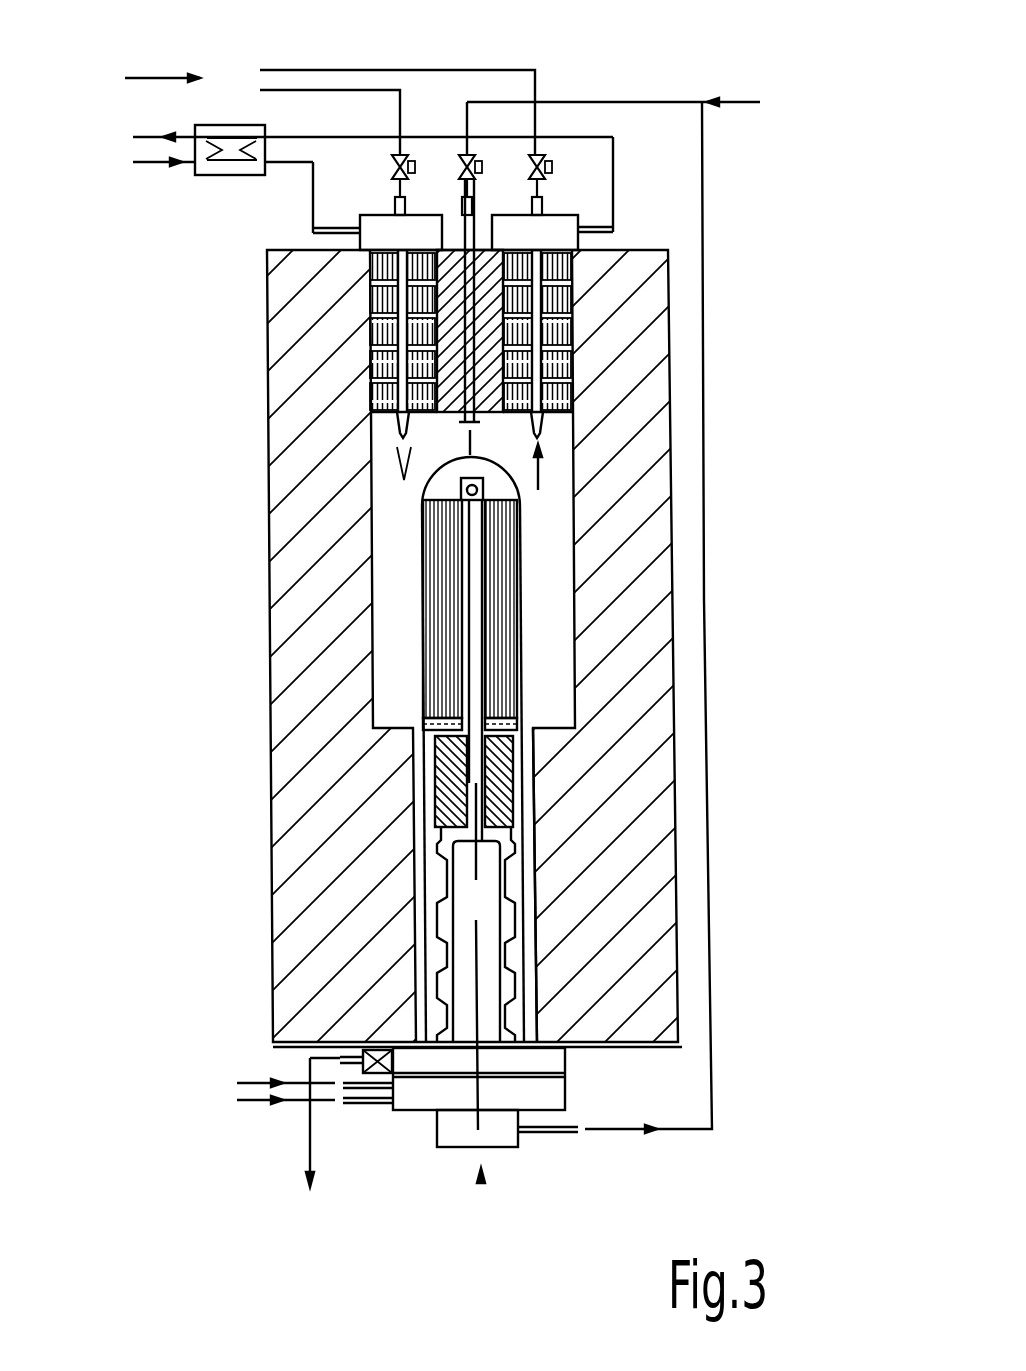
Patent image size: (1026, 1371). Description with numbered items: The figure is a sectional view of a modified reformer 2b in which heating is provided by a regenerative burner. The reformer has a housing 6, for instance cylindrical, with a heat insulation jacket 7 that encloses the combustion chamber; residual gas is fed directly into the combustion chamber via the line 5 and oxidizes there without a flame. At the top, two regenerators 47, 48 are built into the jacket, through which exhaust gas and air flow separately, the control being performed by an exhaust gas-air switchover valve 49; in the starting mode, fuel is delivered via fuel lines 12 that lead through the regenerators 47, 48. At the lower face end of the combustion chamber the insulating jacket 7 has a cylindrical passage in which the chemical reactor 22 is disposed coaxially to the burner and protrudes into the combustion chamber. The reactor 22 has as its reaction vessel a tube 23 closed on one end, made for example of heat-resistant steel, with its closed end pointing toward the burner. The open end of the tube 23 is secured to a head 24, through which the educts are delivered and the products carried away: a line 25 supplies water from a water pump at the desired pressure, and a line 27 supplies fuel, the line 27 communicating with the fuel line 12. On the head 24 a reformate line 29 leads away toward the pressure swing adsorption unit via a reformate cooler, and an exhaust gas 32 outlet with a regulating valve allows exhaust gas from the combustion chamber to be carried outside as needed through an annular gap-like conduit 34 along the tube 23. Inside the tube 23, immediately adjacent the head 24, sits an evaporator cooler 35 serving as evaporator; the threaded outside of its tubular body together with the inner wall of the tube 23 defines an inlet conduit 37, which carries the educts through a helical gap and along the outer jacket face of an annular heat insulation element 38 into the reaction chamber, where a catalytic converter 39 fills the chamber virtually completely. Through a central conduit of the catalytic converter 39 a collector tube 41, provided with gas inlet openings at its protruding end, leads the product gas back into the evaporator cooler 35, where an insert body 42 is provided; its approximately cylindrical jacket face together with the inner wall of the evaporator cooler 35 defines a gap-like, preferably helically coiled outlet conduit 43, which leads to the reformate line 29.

The reformer 2b is at (753, 258).
The line 5 is at (617, 102).
The housing 6 is at (670, 418).
The heat insulation jacket 7 is at (620, 680).
The fuel line 12 is at (368, 90).
The chemical reactor 22 is at (548, 587).
The tube 23 is at (520, 668).
The head 24 is at (481, 1183).
The line 25 is at (247, 1103).
The line for fuel 27 is at (237, 1086).
The reformate line 29 is at (558, 1138).
The exhaust gas 32 is at (313, 1172).
The annular gap-like conduit 34 is at (537, 928).
The evaporator cooler 35 is at (440, 910).
The inlet conduit 37 is at (513, 902).
The annular heat insulation element 38 is at (493, 783).
The catalytic converter 39 is at (493, 560).
The collector tube 41 is at (463, 673).
The insert body 42 is at (492, 918).
The outlet conduit 43 is at (507, 868).
The regenerator 47 is at (392, 333).
The regenerator 48 is at (560, 328).
The exhaust gas-air switchover valve 49 is at (225, 177).